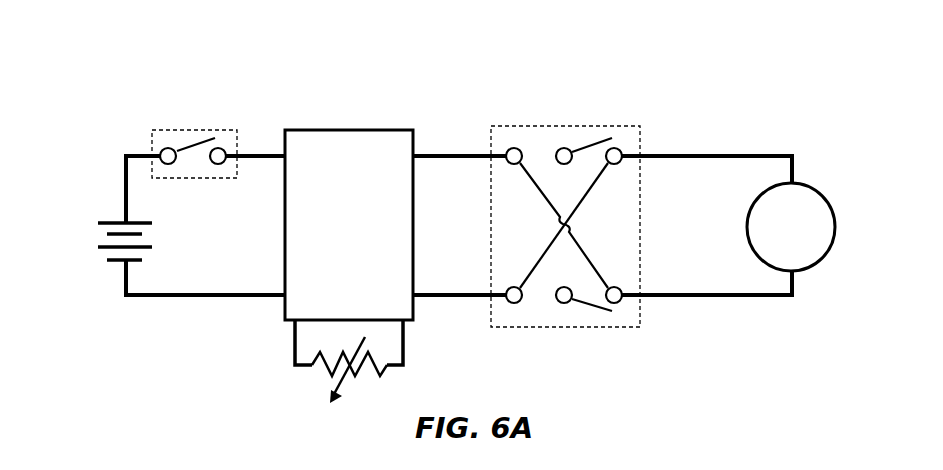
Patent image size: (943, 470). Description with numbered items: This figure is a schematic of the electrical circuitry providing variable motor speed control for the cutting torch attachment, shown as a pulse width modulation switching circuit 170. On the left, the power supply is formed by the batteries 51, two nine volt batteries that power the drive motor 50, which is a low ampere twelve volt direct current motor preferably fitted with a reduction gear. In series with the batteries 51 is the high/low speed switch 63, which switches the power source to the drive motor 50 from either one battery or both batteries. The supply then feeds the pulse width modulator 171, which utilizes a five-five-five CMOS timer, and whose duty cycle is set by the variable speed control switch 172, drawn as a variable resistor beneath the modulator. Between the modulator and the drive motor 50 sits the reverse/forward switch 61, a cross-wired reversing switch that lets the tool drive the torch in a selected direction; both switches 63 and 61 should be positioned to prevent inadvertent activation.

The pulse width modulation switching circuit 170 is at (285, 60).
The battery 51 is at (105, 249).
The high/low speed switch 63 is at (138, 135).
The pulse width modulator 171 is at (365, 237).
The variable speed control switch 172 is at (327, 367).
The reverse/forward switch 61 is at (513, 122).
The drive motor 50 is at (807, 241).